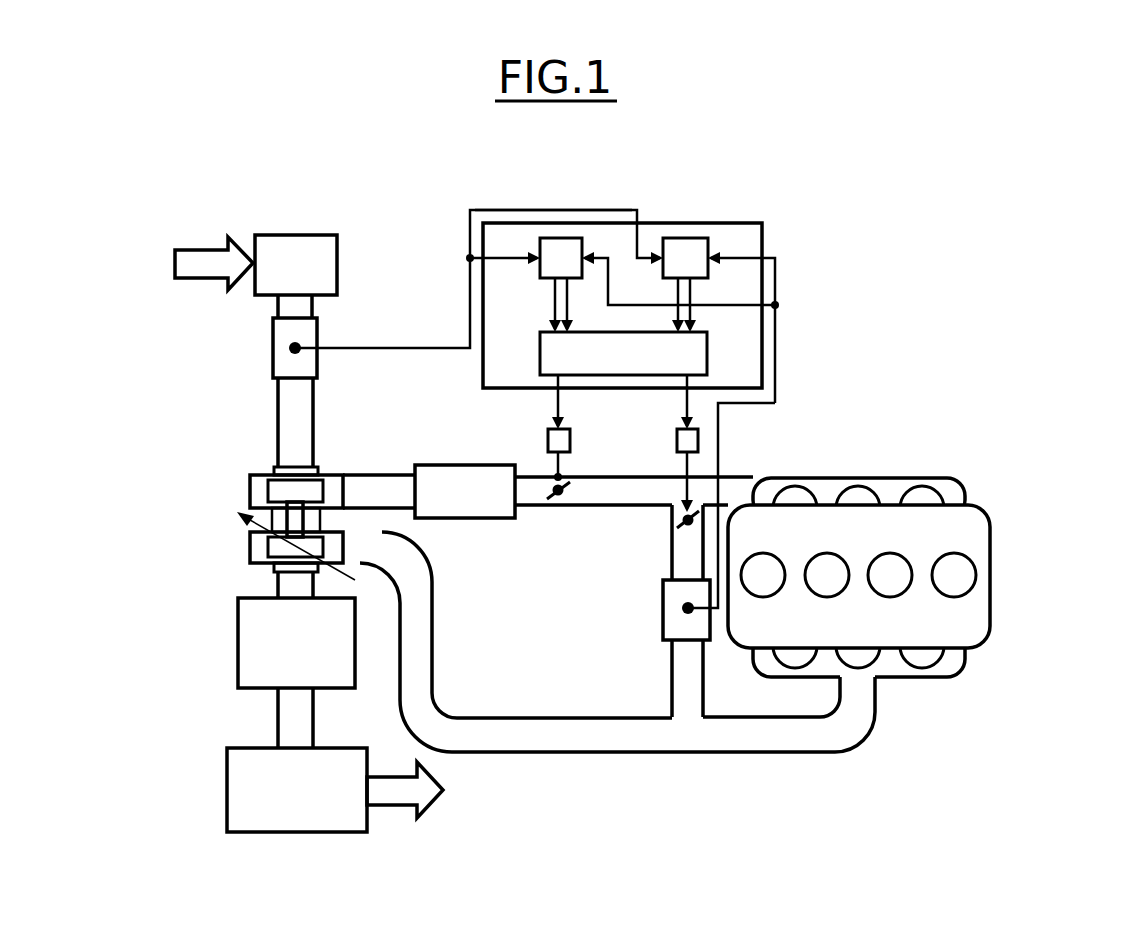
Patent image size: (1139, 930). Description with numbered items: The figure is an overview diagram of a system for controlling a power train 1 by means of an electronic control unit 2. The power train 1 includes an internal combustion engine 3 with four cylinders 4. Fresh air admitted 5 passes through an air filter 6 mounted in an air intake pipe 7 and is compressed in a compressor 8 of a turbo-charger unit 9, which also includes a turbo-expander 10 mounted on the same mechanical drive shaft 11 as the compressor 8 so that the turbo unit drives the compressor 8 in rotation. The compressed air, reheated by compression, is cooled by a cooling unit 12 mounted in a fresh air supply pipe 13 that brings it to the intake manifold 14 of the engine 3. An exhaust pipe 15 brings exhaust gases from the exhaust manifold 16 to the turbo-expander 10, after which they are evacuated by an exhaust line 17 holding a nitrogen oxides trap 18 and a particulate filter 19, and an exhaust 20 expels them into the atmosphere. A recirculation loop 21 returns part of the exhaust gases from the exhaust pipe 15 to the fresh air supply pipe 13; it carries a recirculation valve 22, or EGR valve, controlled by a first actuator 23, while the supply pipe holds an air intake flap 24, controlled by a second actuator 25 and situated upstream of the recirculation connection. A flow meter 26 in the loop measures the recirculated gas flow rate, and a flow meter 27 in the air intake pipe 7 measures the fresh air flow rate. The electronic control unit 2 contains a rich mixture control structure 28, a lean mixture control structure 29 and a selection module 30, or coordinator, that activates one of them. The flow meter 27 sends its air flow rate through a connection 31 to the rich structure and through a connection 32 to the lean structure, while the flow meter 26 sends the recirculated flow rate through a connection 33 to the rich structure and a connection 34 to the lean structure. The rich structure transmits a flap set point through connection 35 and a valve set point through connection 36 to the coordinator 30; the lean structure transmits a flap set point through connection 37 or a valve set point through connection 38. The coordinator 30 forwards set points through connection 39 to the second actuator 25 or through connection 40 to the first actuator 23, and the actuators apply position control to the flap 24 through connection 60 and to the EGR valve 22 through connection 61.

The power train 1 is at (1015, 488).
The electronic control unit 2 is at (707, 223).
The internal combustion engine 3 is at (990, 577).
The cylinders 4 is at (763, 553).
The fresh air admitted 5 is at (202, 248).
The air filter 6 is at (295, 235).
The air intake pipe 7 is at (278, 422).
The compressor 8 is at (250, 492).
The turbo-charger unit 9 is at (222, 516).
The turbo-expander 10 is at (250, 548).
The mechanical drive shaft 11 is at (305, 518).
The cooling unit 12 is at (465, 464).
The fresh air supply pipe 13 is at (378, 475).
The intake manifold 14 is at (858, 478).
The exhaust pipe 15 is at (637, 752).
The exhaust manifold 16 is at (922, 677).
The exhaust line 17 is at (278, 717).
The nitrogen oxides trap 18 is at (238, 643).
The particulate filter 19 is at (227, 790).
The exhaust 20 is at (424, 814).
The recirculation loop 21 is at (672, 678).
The recirculation valve 22 is at (678, 521).
The first actuator 23 is at (676, 440).
The air intake flap 24 is at (553, 507).
The second actuator 25 is at (547, 440).
The flow meter 26 is at (663, 610).
The flow meter 27 is at (273, 348).
The rich mixture control structure 28 is at (561, 258).
The lean mixture control structure 29 is at (685, 258).
The selection module 30 is at (623, 353).
The connection 31 is at (401, 348).
The connection 32 is at (553, 210).
The connection 33 is at (720, 415).
The connection 34 is at (778, 283).
The connection 35 is at (553, 308).
The connection 36 is at (568, 322).
The connection 37 is at (677, 322).
The connection 38 is at (691, 322).
The connection 39 is at (559, 410).
The connection 40 is at (686, 410).
The connection 60 is at (559, 465).
The connection 61 is at (686, 465).